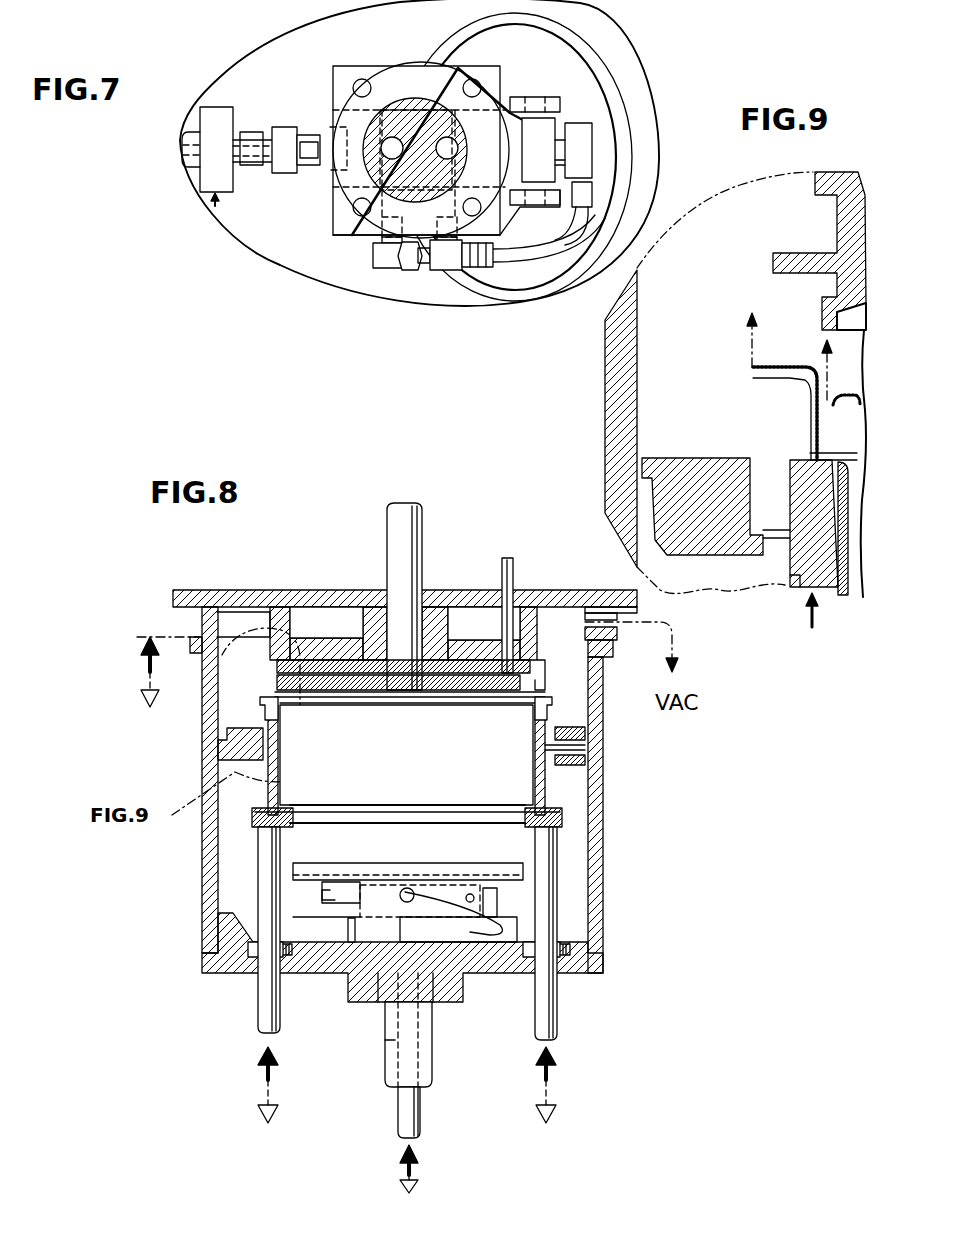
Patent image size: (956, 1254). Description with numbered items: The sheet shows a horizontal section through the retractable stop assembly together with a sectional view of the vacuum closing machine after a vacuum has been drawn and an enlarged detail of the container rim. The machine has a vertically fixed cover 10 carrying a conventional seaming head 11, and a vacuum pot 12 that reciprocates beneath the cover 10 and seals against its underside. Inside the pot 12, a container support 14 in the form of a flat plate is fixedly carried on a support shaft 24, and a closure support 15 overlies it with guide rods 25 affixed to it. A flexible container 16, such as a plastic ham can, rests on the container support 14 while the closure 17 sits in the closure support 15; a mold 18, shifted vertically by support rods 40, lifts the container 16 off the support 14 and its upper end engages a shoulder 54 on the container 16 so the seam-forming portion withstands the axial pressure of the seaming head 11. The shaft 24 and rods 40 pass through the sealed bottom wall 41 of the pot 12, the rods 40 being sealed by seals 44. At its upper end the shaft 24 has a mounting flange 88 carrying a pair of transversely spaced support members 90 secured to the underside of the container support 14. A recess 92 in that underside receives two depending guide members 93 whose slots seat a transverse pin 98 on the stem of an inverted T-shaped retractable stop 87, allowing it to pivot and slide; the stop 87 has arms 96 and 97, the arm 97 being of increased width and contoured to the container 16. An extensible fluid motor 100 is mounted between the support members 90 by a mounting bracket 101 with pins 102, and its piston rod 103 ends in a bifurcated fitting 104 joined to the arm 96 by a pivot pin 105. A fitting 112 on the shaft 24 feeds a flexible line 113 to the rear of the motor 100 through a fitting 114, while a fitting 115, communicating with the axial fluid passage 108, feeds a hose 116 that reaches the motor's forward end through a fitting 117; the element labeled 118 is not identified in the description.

In FIG. 8, the cover 10 is at (200, 622).
In FIG. 9, the seaming head 11 is at (835, 226).
In FIG. 8, the seaming head 11 is at (535, 678).
In FIG. 9, the vacuum pot 12 is at (604, 415).
In FIG. 8, the vacuum pot 12 is at (604, 832).
In FIG. 7, the container support 14 is at (282, 264).
In FIG. 8, the container support 14 is at (440, 868).
In FIG. 9, the closure support 15 is at (700, 470).
In FIG. 8, the closure support 15 is at (568, 728).
In FIG. 9, the container 16 is at (845, 597).
In FIG. 8, the container 16 is at (535, 760).
In FIG. 9, the closure 17 is at (800, 366).
In FIG. 8, the closure 17 is at (397, 715).
In FIG. 9, the mold 18 is at (790, 592).
In FIG. 8, the mold 18 is at (565, 788).
In FIG. 7, the support shaft 24 is at (398, 105).
In FIG. 8, the support shaft 24 is at (437, 1060).
In FIG. 8, the guide rods 25 is at (422, 1116).
In FIG. 8, the support rods 40 is at (265, 1005).
In FIG. 8, the bottom wall 41 is at (575, 970).
In FIG. 8, the seals 44 is at (560, 946).
In FIG. 9, the shoulder 54 is at (805, 470).
In FIG. 7, the retractable stop 87 is at (210, 204).
In FIG. 7, the mounting flange 88 is at (334, 108).
In FIG. 8, the mounting flange 88 is at (348, 935).
In FIG. 7, the support members 90 is at (538, 100).
In FIG. 8, the support members 90 is at (360, 918).
In FIG. 7, the recess 92 is at (255, 168).
In FIG. 7, the guide members 93 is at (190, 128).
In FIG. 7, the arm 96 is at (304, 160).
In FIG. 7, the arm 97 is at (212, 107).
In FIG. 7, the transverse pin 98 is at (248, 130).
In FIG. 7, the extensible fluid motor 100 is at (550, 132).
In FIG. 7, the mounting bracket 101 is at (552, 100).
In FIG. 7, the pins 102 is at (600, 72).
In FIG. 7, the piston rod 103 is at (328, 195).
In FIG. 7, the bifurcated fitting 104 is at (290, 116).
In FIG. 7, the pivot pin 105 is at (284, 176).
In FIG. 7, the fluid passage 108 is at (540, 86).
In FIG. 7, the fitting 112 is at (380, 268).
In FIG. 7, the flexible line 113 is at (412, 270).
In FIG. 7, the fitting 114 is at (592, 197).
In FIG. 7, the fitting 115 is at (447, 270).
In FIG. 7, the hose 116 is at (610, 252).
In FIG. 7, the fitting 117 is at (440, 128).
In FIG. 7, the connector 118 is at (372, 256).